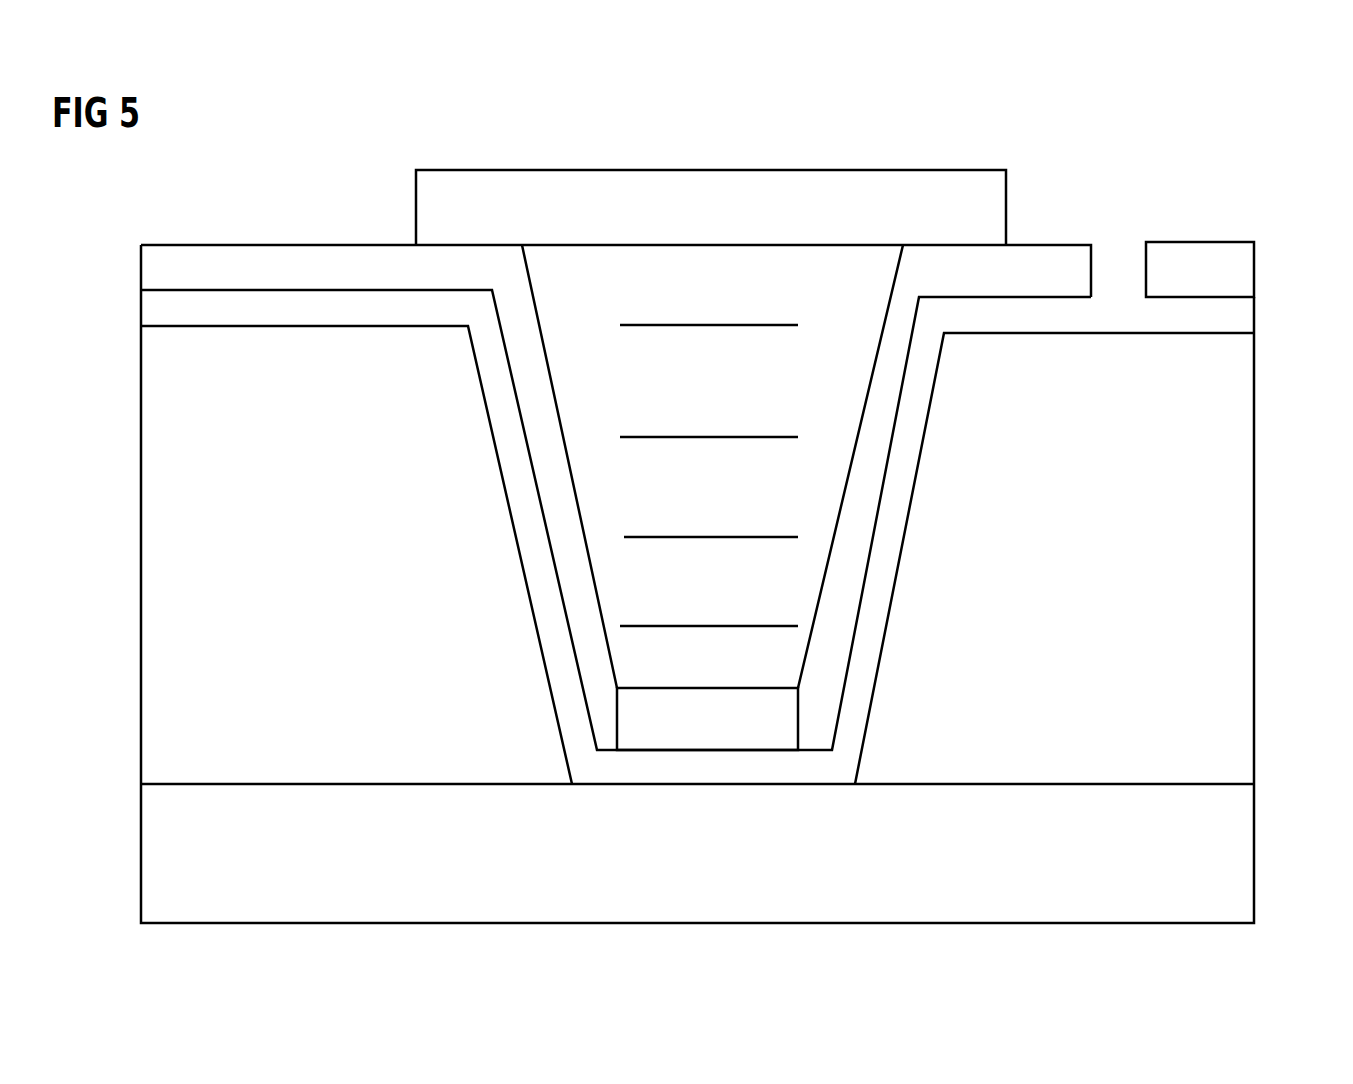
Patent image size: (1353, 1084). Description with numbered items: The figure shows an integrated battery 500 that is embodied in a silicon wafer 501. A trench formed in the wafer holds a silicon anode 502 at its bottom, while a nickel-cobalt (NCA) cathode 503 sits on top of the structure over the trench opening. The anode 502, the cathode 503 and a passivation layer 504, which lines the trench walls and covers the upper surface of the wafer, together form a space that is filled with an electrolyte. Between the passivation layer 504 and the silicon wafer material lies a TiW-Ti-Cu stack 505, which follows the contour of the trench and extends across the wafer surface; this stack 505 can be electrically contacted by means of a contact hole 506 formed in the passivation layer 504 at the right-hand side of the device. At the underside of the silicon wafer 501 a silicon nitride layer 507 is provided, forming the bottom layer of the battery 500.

The integrated battery 500 is at (1235, 170).
The silicon wafer 501 is at (1233, 388).
The silicon anode 502 is at (687, 685).
The nickel-cobalt (NCA) cathode 503 is at (890, 169).
The passivation layer 504 is at (240, 252).
The TiW-Ti-Cu stack 505 is at (1243, 323).
The contact hole 506 is at (1113, 246).
The silicon nitride layer 507 is at (1237, 827).